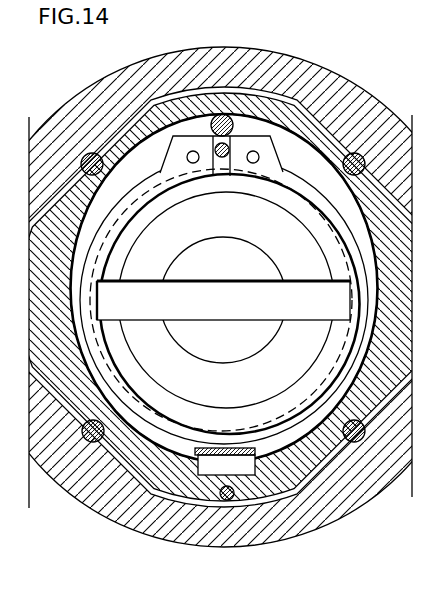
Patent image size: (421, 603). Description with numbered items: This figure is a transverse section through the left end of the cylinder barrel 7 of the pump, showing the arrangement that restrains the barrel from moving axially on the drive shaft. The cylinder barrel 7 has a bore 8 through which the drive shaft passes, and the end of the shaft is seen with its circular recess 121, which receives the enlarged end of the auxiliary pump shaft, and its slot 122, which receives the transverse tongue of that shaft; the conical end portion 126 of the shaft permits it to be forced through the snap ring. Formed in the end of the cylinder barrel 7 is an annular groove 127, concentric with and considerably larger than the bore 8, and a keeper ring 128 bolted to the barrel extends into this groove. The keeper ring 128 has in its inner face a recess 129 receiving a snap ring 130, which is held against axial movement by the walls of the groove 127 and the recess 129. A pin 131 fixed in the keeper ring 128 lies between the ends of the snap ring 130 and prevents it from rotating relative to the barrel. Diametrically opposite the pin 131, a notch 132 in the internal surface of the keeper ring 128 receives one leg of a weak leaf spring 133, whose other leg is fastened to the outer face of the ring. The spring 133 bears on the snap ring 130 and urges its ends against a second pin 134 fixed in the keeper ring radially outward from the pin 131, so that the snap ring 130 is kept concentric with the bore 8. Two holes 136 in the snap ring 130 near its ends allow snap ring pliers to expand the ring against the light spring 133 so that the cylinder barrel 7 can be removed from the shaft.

The cylinder barrel 7 is at (135, 527).
The bore 8 is at (310, 368).
The circular recess 121 is at (247, 240).
The slot 122 is at (325, 283).
The end portion 126 is at (168, 253).
The annular groove 127 is at (283, 497).
The keeper ring 128 is at (313, 484).
The recess 129 is at (97, 383).
The snap ring 130 is at (337, 347).
The pin 131 is at (222, 157).
The notch 132 is at (240, 468).
The leaf spring 133 is at (213, 447).
The pin 134 is at (219, 114).
The holes 136 is at (253, 163).